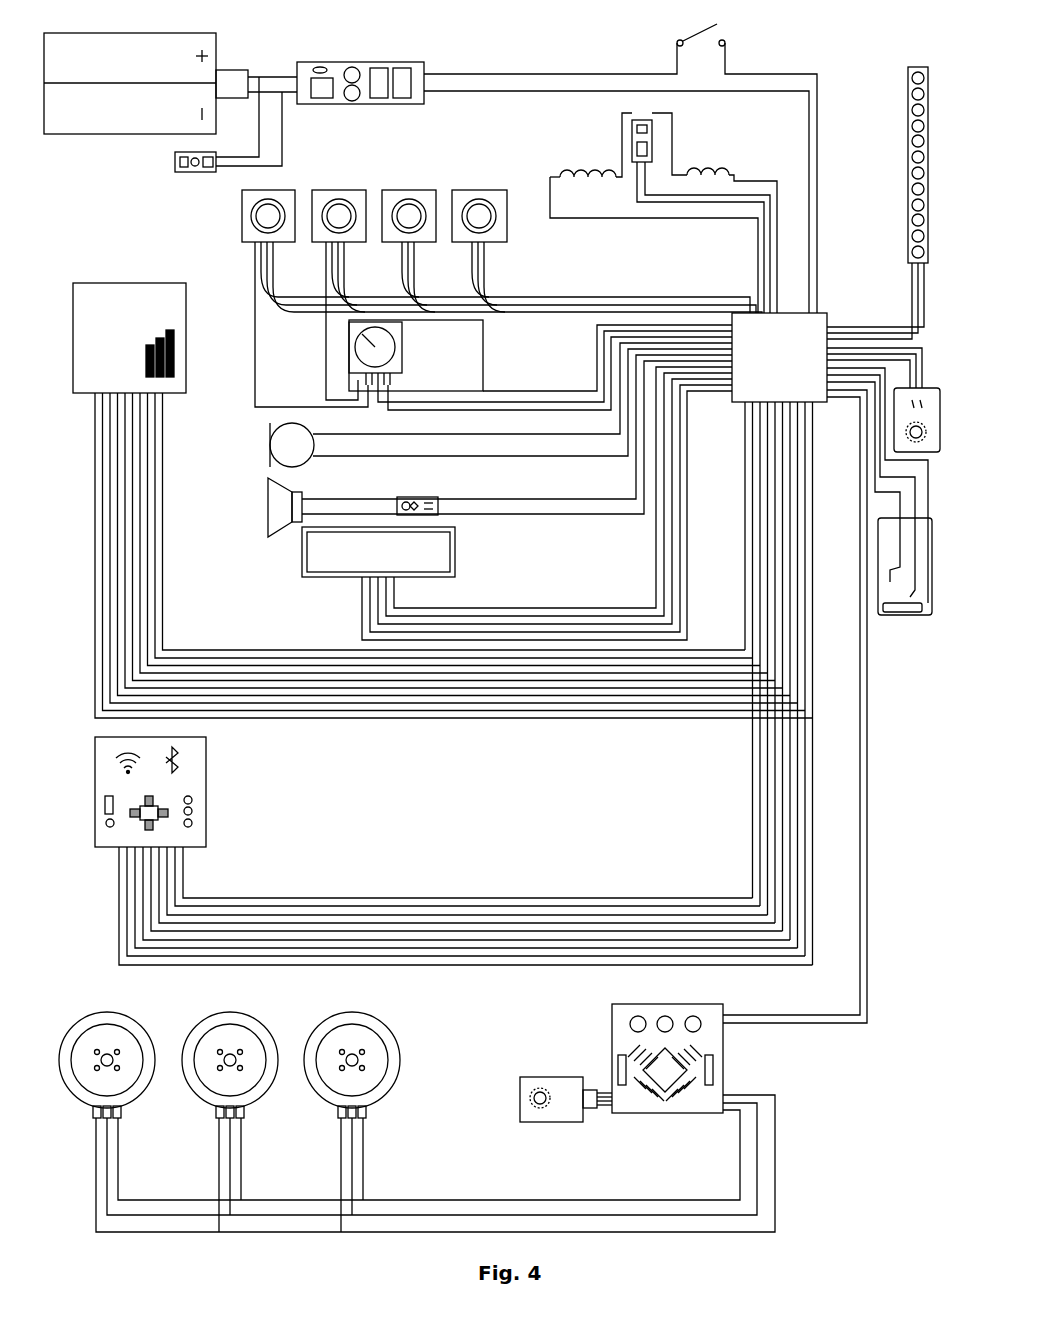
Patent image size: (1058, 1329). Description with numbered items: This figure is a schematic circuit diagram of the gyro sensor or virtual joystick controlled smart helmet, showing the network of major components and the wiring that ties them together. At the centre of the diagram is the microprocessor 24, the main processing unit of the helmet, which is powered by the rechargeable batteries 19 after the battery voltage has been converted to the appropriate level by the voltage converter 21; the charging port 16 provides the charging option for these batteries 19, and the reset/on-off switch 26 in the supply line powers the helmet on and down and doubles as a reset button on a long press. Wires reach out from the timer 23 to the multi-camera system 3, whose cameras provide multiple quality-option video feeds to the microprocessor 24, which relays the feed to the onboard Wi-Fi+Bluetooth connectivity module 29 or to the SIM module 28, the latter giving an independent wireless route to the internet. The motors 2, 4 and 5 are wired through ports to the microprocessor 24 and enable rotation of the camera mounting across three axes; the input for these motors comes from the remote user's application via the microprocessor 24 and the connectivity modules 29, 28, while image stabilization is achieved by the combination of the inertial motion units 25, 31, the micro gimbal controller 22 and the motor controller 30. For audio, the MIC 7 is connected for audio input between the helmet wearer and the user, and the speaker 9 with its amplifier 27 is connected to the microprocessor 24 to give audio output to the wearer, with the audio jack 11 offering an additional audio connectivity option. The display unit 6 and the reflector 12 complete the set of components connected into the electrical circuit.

The motor 2 is at (107, 1012).
The multi-camera system 3 is at (350, 190).
The motor 4 is at (352, 1012).
The motor 5 is at (230, 1012).
The display unit 6 is at (455, 550).
The MIC 7 is at (268, 441).
The speaker 9 is at (268, 505).
The audio jack 11 is at (905, 615).
The reflector 12 is at (908, 110).
The charging port 16 is at (175, 160).
The rechargeable batteries 19 is at (76, 34).
The voltage converter 21 is at (312, 62).
The micro gimbal controller 22 is at (630, 132).
The timer 23 is at (404, 342).
The microprocessor 24 is at (779, 639).
The inertial motion unit 25 is at (932, 450).
The reset/on-off switch 26 is at (692, 38).
The amplifier 27 is at (410, 497).
The SIM module 28 is at (131, 283).
The Wi-Fi+Bluetooth connectivity module 29 is at (206, 773).
The motor controller 30 is at (640, 1004).
The inertial motion unit 31 is at (551, 1077).